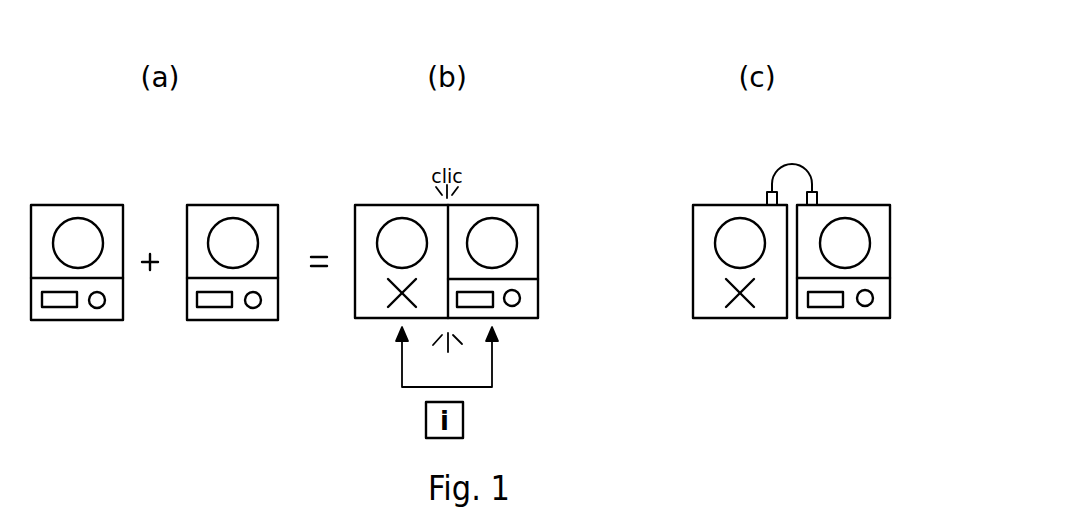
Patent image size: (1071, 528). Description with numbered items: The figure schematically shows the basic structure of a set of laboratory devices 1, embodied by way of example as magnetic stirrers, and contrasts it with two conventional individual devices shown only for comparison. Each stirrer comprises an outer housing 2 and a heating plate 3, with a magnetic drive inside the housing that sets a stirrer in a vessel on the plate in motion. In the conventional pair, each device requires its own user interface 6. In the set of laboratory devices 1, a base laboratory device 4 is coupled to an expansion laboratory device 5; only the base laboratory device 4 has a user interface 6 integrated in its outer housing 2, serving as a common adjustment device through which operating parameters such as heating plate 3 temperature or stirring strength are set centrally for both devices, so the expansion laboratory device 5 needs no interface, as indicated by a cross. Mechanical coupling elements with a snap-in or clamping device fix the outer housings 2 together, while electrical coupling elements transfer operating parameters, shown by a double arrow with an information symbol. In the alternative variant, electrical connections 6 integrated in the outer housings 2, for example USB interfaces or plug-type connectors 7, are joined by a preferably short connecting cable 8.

The set of laboratory devices 1 is at (395, 103).
The outer housing 2 is at (123, 265).
The heating plate 3 is at (72, 233).
The base laboratory device 4 is at (530, 222).
The expansion laboratory device 5 is at (375, 308).
The user interface 6 is at (80, 312).
The connector 7 is at (767, 197).
The connecting cable 8 is at (792, 165).